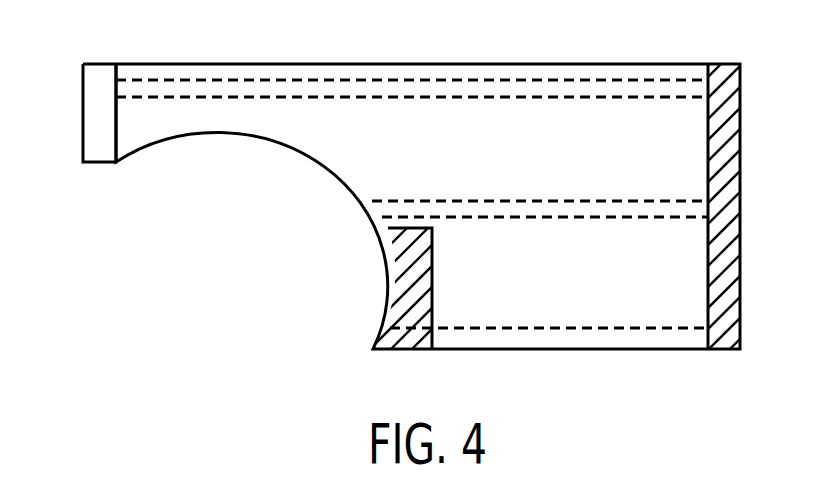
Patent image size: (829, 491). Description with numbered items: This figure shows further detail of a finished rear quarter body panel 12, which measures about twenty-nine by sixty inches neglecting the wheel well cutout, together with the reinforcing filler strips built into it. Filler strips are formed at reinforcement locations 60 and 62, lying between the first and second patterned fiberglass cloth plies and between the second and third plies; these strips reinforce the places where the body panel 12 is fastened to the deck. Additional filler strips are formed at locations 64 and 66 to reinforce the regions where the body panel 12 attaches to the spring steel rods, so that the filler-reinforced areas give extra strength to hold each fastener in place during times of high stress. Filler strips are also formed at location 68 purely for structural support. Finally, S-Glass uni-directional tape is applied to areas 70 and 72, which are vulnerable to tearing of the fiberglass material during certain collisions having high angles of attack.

The rear quarter body panel 12 is at (517, 164).
The reinforcement location 60 is at (653, 70).
The reinforcement location 62 is at (563, 82).
The filler strip location 64 is at (618, 210).
The filler strip location 66 is at (640, 343).
The filler strip location 68 is at (93, 88).
The S-Glass tape area 70 is at (732, 258).
The S-Glass tape area 72 is at (400, 280).